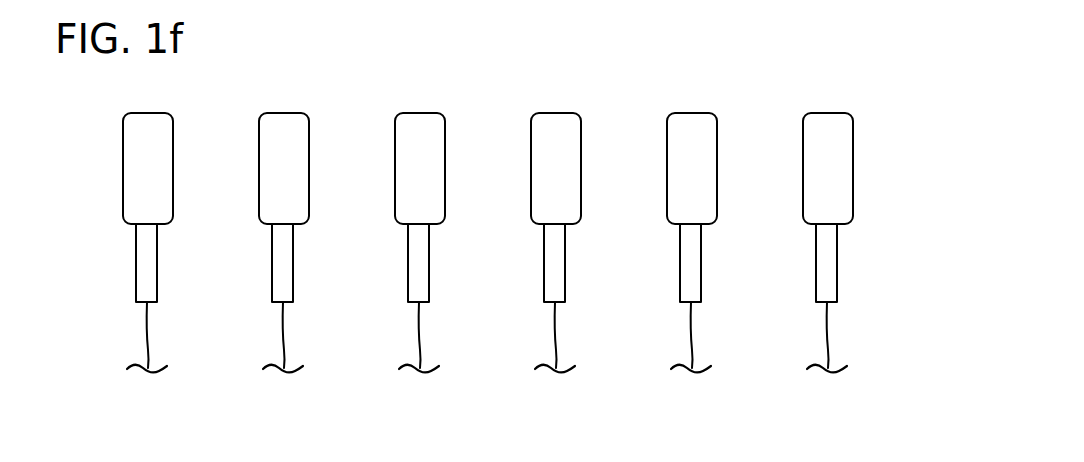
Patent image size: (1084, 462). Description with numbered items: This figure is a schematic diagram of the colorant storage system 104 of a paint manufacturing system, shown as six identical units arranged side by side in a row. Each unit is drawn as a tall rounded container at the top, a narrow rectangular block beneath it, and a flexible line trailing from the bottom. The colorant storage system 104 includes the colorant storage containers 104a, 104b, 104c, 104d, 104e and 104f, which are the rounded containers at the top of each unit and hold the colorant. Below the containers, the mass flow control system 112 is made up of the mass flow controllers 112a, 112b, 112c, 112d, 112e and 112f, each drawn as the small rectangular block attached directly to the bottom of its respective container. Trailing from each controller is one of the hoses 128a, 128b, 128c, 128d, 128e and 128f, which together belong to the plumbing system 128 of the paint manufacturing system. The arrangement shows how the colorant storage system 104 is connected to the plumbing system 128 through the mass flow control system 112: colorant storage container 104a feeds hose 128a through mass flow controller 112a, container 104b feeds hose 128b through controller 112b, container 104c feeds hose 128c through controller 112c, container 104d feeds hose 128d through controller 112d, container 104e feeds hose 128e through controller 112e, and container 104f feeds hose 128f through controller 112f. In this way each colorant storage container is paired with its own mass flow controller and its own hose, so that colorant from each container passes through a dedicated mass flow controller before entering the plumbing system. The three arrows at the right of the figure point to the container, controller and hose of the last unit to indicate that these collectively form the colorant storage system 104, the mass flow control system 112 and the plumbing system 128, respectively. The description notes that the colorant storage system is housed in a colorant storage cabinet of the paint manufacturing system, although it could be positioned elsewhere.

The colorant storage system 104 is at (499, 168).
The colorant storage container 104a is at (135, 183).
The colorant storage container 104b is at (271, 183).
The colorant storage container 104c is at (407, 183).
The colorant storage container 104d is at (543, 183).
The colorant storage container 104e is at (679, 183).
The colorant storage container 104f is at (815, 183).
The mass flow control system 112 is at (486, 264).
The mass flow controller 112a is at (140, 277).
The mass flow controller 112b is at (276, 277).
The mass flow controller 112c is at (412, 279).
The mass flow controller 112d is at (548, 279).
The mass flow controller 112e is at (684, 281).
The mass flow controller 112f is at (820, 282).
The plumbing system 128 is at (488, 342).
The hose 128a is at (150, 348).
The hose 128b is at (286, 348).
The hose 128c is at (422, 348).
The hose 128d is at (558, 348).
The hose 128e is at (694, 348).
The hose 128f is at (830, 348).